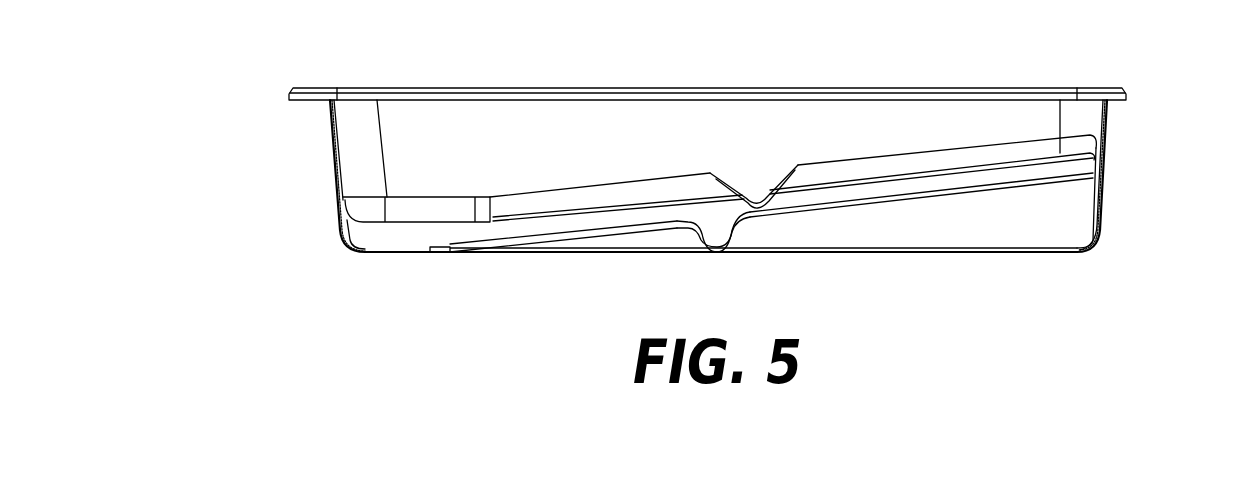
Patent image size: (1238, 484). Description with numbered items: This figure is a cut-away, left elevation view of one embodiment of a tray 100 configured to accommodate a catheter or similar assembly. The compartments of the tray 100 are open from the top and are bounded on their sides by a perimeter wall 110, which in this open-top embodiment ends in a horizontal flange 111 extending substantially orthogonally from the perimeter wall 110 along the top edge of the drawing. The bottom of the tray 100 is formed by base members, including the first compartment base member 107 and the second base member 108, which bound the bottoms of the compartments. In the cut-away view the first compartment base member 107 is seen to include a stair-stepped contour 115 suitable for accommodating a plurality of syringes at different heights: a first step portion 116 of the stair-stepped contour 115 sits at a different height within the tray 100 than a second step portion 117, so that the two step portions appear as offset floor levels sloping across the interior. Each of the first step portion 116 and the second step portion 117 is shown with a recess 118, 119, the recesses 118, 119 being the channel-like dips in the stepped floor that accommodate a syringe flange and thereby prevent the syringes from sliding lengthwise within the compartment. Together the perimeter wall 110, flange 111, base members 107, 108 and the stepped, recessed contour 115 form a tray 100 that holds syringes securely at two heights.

The tray 100 is at (303, 135).
The first compartment base member 107 is at (917, 202).
The second base member 108 is at (900, 252).
The perimeter wall 110 is at (353, 160).
The horizontal flange 111 is at (1000, 77).
The stair-stepped contour 115 is at (1105, 200).
The first step portion 116 is at (837, 170).
The second step portion 117 is at (622, 232).
The recess 118 is at (756, 185).
The recess 119 is at (712, 230).